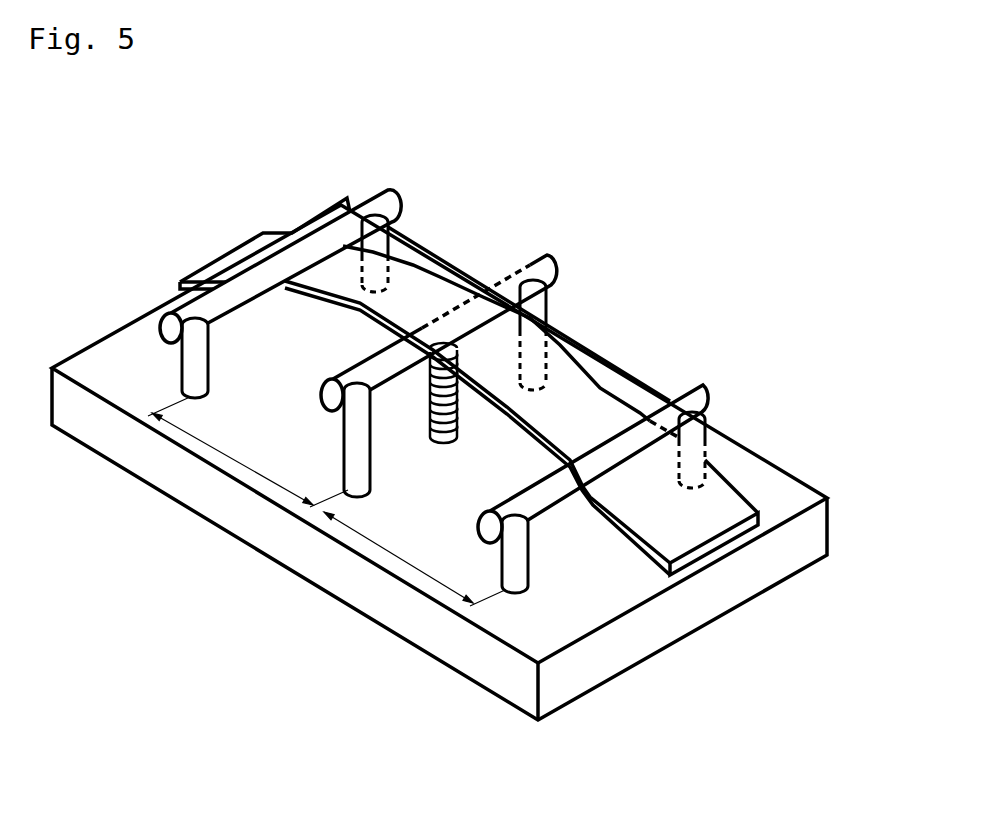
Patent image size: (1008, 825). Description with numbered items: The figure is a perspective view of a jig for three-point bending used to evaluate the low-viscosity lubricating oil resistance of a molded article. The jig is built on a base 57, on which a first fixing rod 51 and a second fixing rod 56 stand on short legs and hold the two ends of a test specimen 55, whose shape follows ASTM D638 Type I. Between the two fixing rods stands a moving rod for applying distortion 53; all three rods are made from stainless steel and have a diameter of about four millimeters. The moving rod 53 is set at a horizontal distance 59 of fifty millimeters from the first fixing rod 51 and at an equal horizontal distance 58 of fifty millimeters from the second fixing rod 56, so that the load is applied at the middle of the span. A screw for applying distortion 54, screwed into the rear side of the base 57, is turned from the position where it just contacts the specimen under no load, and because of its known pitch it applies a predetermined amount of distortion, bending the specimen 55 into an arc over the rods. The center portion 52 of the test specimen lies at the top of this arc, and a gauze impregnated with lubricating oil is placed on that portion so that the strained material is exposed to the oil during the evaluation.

The first fixing rod 51 is at (317, 258).
The center portion of a test specimen 52 is at (469, 379).
The moving rod for applying distortion 53 is at (475, 341).
The screw for applying distortion 54 is at (545, 324).
The test specimen 55 is at (550, 314).
The second fixing rod 56 is at (648, 436).
The base 57 is at (481, 462).
The horizontal distance from the second fixing rod to the moving rod for applying di 58 is at (402, 578).
The horizontal distance from the first fixing rod to the moving rod for applying dis 59 is at (248, 482).